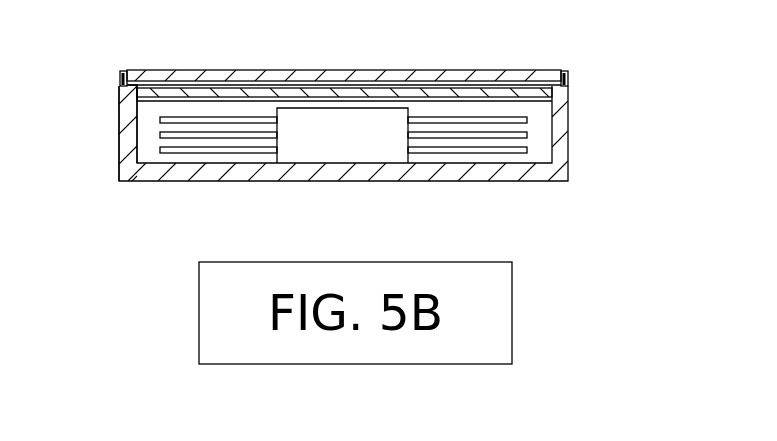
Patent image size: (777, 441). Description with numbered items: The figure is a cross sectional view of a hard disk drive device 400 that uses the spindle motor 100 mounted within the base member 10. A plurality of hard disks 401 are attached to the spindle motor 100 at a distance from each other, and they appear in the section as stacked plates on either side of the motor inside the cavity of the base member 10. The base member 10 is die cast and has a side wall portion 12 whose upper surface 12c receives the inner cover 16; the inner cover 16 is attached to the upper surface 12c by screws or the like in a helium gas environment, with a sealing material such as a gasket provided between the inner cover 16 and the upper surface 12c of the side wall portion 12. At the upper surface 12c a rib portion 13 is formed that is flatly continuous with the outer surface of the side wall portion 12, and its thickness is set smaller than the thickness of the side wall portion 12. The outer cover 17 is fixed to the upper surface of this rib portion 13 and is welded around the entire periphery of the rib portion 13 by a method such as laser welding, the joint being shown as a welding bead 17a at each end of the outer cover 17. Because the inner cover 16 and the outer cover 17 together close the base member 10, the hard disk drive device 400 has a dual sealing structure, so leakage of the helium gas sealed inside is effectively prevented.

The base member 10 is at (568, 128).
The side wall portion 12 is at (119, 140).
The upper surface of the side wall portion 12c is at (131, 94).
The rib portion 13 is at (119, 78).
The inner cover 16 is at (458, 90).
The outer cover 17 is at (258, 70).
The welding bead 17a is at (128, 70).
The spindle motor 100 is at (362, 145).
The hard disk drive device 400 is at (597, 61).
The hard disks 401 is at (458, 155).